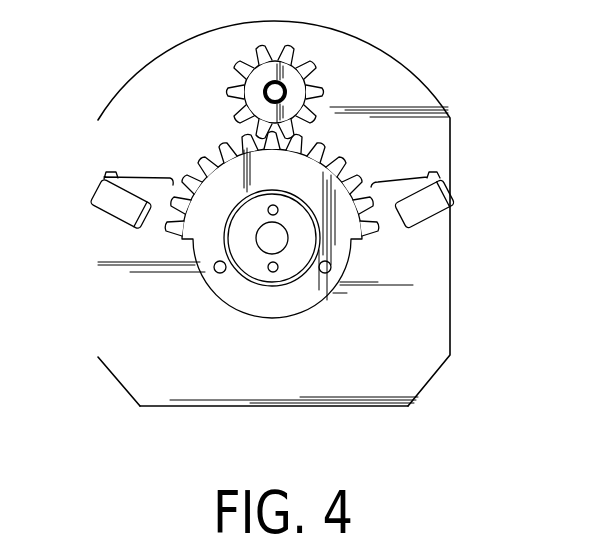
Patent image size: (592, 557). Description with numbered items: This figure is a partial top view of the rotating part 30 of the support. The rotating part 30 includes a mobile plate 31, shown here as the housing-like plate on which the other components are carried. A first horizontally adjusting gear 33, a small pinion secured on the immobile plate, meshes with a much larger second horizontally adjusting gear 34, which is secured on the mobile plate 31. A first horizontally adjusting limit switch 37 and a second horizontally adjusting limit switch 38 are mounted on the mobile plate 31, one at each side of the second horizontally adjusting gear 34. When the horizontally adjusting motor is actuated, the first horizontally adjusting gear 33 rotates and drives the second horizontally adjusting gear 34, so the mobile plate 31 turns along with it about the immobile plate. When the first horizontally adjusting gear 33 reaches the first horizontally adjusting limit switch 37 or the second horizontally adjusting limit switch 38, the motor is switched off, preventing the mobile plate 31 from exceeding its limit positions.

The rotating part 30 is at (474, 93).
The mobile plate 31 is at (370, 398).
The first horizontally adjusting gear 33 is at (313, 88).
The second horizontally adjusting gear 34 is at (305, 312).
The first horizontally adjusting limit switch 37 is at (453, 190).
The second horizontally adjusting limit switch 38 is at (93, 183).